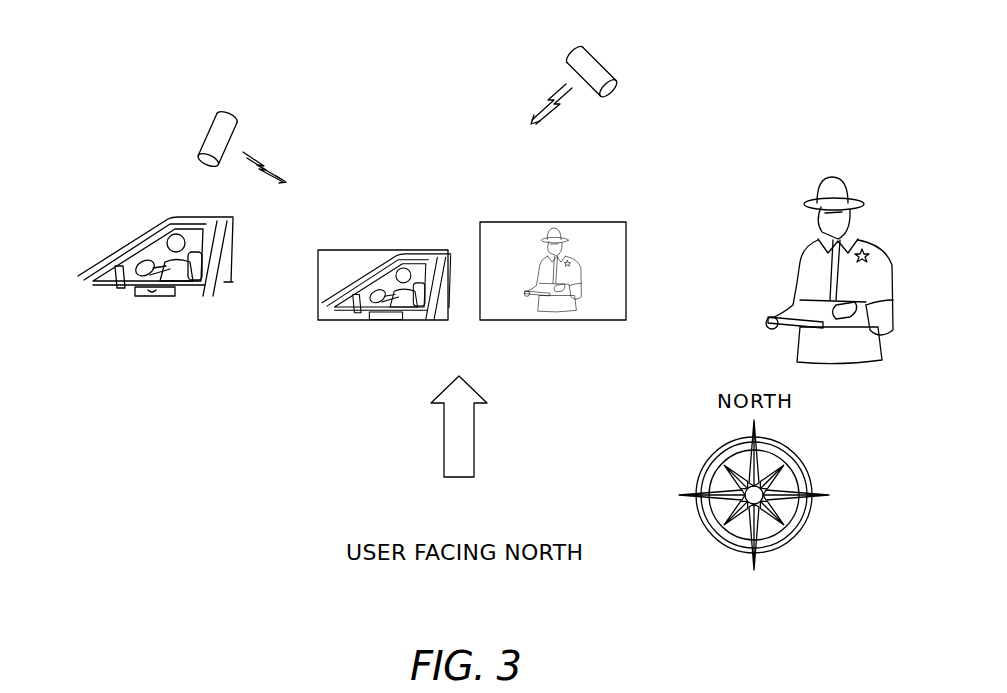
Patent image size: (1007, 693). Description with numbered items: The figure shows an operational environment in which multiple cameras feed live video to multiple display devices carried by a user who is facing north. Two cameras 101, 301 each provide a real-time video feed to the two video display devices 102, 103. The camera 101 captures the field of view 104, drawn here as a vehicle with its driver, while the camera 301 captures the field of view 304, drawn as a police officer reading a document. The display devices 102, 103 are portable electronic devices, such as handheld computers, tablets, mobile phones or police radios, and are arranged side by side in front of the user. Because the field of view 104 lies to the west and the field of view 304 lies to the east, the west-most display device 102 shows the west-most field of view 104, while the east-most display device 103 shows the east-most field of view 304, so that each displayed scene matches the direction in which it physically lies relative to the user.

The camera 101 is at (236, 111).
The camera 301 is at (602, 61).
The field of view 104 is at (235, 218).
The video display device 102 is at (380, 250).
The video display device 103 is at (553, 222).
The field of view 304 is at (810, 248).